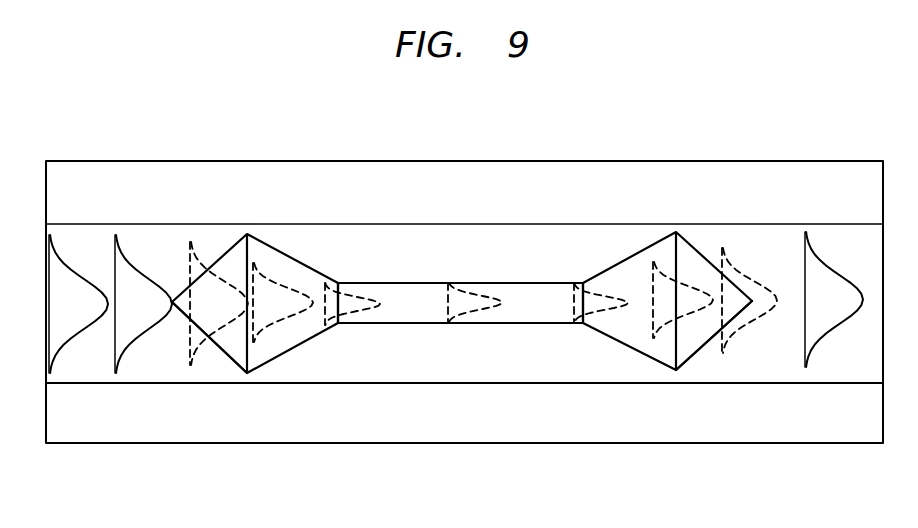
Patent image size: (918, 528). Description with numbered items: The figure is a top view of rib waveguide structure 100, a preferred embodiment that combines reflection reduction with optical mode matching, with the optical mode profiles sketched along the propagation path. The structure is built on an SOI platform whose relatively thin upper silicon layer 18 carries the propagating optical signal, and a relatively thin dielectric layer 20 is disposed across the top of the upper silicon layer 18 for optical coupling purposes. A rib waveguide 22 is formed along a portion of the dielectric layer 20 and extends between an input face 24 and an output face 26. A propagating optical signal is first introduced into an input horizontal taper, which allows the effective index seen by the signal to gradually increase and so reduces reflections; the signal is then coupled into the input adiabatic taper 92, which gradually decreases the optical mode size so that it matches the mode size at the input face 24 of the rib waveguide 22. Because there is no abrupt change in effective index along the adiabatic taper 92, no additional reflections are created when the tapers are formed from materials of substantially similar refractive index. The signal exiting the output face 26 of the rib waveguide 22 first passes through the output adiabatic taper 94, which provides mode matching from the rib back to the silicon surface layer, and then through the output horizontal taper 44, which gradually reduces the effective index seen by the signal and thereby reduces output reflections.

The rib waveguide structure 100 is at (746, 104).
The upper silicon layer 18 is at (114, 177).
The dielectric layer 20 is at (398, 360).
The rib waveguide 22 is at (423, 292).
The input face 24 is at (331, 303).
The output face 26 is at (590, 302).
The output horizontal taper 44 is at (228, 340).
The input adiabatic taper 92 is at (277, 263).
The output adiabatic taper 94 is at (628, 272).